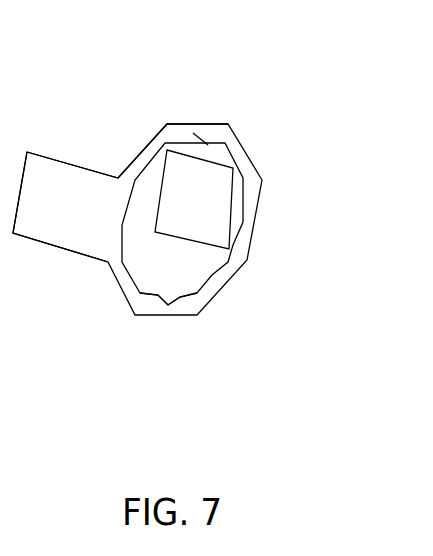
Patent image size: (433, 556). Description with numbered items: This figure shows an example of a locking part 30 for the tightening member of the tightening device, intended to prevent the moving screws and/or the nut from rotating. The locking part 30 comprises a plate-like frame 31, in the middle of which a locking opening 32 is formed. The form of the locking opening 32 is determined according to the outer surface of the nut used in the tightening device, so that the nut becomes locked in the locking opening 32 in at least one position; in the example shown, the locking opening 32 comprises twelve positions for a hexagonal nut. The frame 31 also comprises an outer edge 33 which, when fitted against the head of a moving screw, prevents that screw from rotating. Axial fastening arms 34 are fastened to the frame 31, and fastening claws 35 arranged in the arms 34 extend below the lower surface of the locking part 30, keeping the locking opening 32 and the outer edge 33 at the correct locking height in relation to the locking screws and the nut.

The locking part 30 is at (118, 39).
The plate-like frame 31 is at (218, 133).
The locking opening 32 is at (178, 297).
The outer edge 33 is at (167, 125).
The axial fastening arm 34 is at (47, 232).
The fastening claw 35 is at (30, 152).